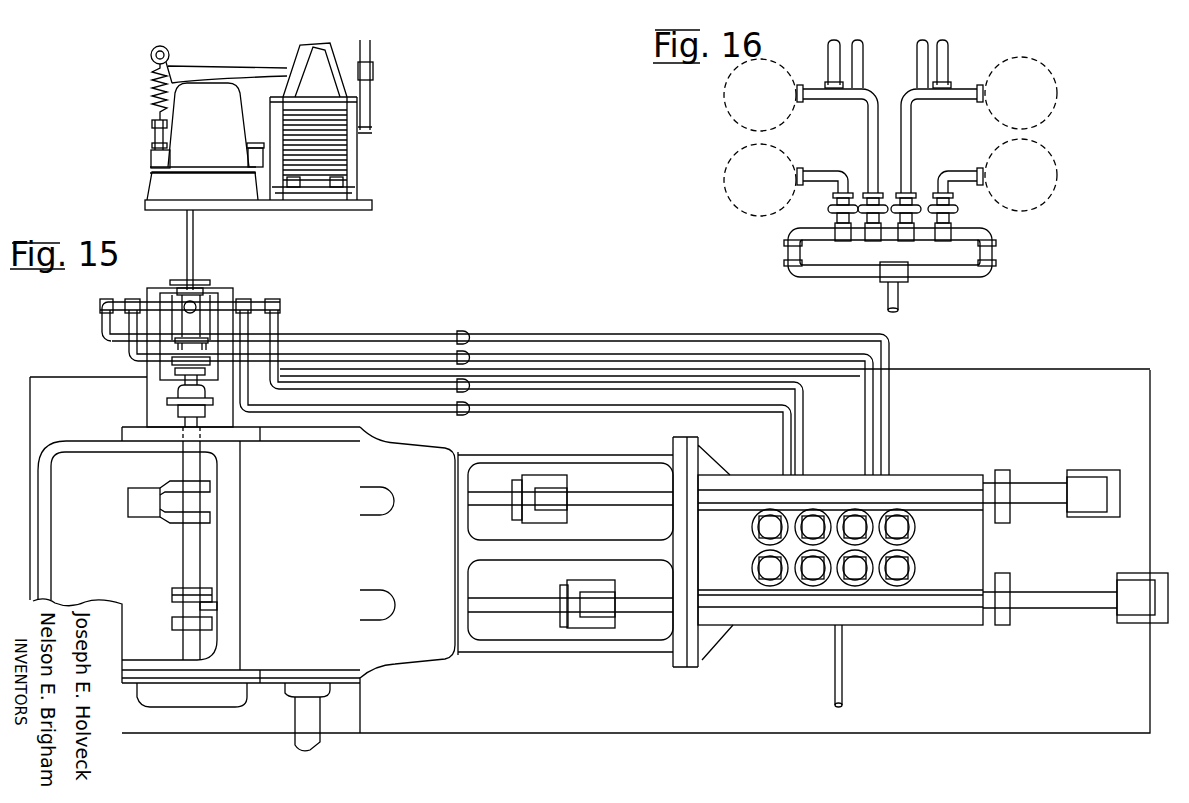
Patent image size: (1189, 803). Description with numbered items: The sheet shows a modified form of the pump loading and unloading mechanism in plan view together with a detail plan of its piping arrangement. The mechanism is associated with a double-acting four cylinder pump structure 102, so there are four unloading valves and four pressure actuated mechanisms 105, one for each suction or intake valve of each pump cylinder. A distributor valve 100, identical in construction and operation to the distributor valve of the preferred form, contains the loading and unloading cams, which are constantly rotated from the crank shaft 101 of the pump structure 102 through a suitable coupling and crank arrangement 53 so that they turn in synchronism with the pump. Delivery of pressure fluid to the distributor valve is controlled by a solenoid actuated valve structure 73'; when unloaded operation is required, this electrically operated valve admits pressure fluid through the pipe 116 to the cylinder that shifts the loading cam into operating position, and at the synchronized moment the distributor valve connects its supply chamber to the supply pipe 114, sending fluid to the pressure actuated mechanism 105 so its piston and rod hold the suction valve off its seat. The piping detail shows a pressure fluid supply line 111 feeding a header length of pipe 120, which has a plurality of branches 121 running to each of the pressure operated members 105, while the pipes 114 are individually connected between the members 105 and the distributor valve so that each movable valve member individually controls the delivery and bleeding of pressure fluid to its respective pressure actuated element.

In FIG. 15, the solenoid actuated valve structure 73' is at (259, 123).
In FIG. 15, the pipe 116 is at (193, 252).
In FIG. 15, the distributor valve 100 is at (203, 338).
In FIG. 15, the coupling and crank arrangement 53 is at (167, 396).
In FIG. 15, the crank shaft 101 is at (183, 560).
In FIG. 15, the pump structure 102 is at (487, 463).
In FIG. 15, the supply pipe 114 is at (515, 334).
In FIG. 16, the supply pipe 114 is at (855, 45).
In FIG. 15, the pressure fluid supply line 111 is at (845, 676).
In FIG. 16, the pressure fluid supply line 111 is at (903, 298).
In FIG. 16, the pressure actuated mechanism 105 is at (738, 156).
In FIG. 16, the branches 121 is at (900, 88).
In FIG. 16, the header length of pipe 120 is at (968, 240).